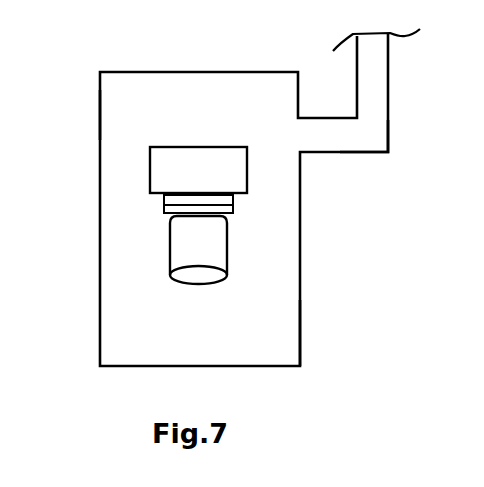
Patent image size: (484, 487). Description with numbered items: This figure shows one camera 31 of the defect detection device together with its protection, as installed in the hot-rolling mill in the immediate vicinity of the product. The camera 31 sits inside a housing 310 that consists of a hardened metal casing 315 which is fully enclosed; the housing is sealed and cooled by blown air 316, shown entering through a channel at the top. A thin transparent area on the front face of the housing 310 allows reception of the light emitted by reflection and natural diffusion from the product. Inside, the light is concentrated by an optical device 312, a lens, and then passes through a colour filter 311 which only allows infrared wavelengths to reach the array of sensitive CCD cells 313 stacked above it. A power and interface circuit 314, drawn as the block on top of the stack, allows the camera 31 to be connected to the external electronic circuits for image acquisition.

The camera 31 is at (98, 113).
The housing 310 is at (202, 367).
The colour filter 311 is at (176, 211).
The optical device 312 is at (182, 245).
The array of sensitive CCD cells 313 is at (175, 200).
The power and interface circuit 314 is at (173, 168).
The hardened metal casing 315 is at (300, 366).
The blown air 316 is at (360, 143).